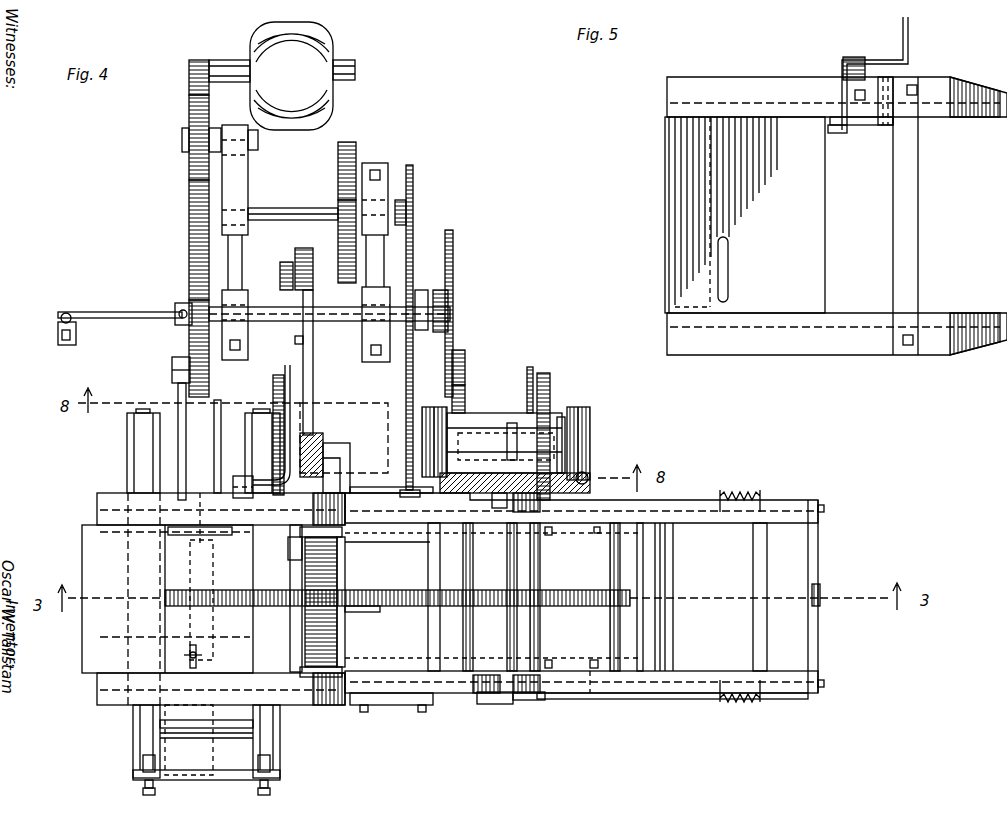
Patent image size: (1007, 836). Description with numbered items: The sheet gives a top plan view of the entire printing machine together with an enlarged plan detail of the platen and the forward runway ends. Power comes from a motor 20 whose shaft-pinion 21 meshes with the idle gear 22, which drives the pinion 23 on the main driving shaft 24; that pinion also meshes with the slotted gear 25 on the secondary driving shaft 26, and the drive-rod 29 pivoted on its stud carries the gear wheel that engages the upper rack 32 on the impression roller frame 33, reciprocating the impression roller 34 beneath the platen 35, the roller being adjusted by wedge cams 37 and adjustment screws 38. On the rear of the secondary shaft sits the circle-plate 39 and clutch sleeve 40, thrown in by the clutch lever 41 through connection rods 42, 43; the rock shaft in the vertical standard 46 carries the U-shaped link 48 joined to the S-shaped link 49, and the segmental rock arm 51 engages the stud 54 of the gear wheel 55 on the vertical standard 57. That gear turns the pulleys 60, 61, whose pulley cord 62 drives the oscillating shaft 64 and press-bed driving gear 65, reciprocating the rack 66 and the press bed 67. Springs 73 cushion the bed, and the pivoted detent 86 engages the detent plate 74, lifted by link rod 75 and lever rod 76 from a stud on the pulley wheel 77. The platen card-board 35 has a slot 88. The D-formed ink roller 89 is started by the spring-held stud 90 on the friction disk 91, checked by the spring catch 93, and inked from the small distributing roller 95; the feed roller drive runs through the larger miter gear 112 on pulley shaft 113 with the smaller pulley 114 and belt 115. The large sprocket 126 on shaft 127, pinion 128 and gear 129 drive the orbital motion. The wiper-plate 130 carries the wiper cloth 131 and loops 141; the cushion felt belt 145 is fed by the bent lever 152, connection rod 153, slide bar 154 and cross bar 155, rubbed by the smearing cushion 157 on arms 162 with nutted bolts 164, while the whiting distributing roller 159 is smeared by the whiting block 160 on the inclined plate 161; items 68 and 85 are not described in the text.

In FIG. 4, the motor 20 is at (282, 76).
In FIG. 4, the shaft-pinion 21 is at (188, 72).
In FIG. 4, the idle gear 22 is at (190, 107).
In FIG. 4, the pinion 23 is at (192, 212).
In FIG. 4, the main driving shaft 24 is at (265, 210).
In FIG. 4, the gear 25 is at (195, 330).
In FIG. 4, the secondary driving shaft 26 is at (328, 318).
In FIG. 4, the drive-rod 29 is at (186, 421).
In FIG. 4, the upper rack 32 is at (202, 772).
In FIG. 4, the impression roller frame 33 is at (206, 756).
In FIG. 4, the impression roller 34 is at (187, 733).
In FIG. 4, the support or platen 35 is at (167, 599).
In FIG. 5, the support or platen 35 is at (745, 215).
In FIG. 4, the wedge cams 37 is at (140, 721).
In FIG. 4, the adjustment screws 38 is at (143, 788).
In FIG. 4, the circle-plate 39 is at (453, 253).
In FIG. 4, the clutch sleeve 40 is at (420, 290).
In FIG. 4, the hand-operated clutch lever 41 is at (60, 318).
In FIG. 4, the connection rod 42 is at (115, 312).
In FIG. 4, the connection rod 43 is at (185, 308).
In FIG. 4, the vertical standard 46 is at (458, 412).
In FIG. 4, the U-shaped link 48 is at (505, 452).
In FIG. 4, the S-shaped link 49 is at (468, 382).
In FIG. 4, the segmental rock arm 51 is at (530, 367).
In FIG. 4, the stud 54 is at (528, 423).
In FIG. 4, the gear wheel 55 is at (552, 376).
In FIG. 4, the vertical standard 57 is at (564, 418).
In FIG. 4, the pulley 60 is at (434, 429).
In FIG. 4, the pulley 61 is at (593, 409).
In FIG. 4, the pulley cord 62 is at (591, 453).
In FIG. 4, the oscillating shaft 64 is at (505, 620).
In FIG. 4, the press-bed driving gear 65 is at (492, 595).
In FIG. 4, the rack 66 is at (360, 607).
In FIG. 4, the press bed or plank 67 is at (214, 600).
In FIG. 4, the bolt 68 is at (590, 676).
In FIG. 5, the springs 73 is at (766, 108).
In FIG. 4, the detent plate 74 is at (200, 500).
In FIG. 4, the link rod 75 is at (208, 547).
In FIG. 5, the link rod 75 is at (845, 134).
In FIG. 4, the lever rod 76 is at (282, 372).
In FIG. 5, the lever rod 76 is at (902, 30).
In FIG. 4, the pulley wheel 77 is at (303, 368).
In FIG. 4, the bolt 85 is at (200, 655).
In FIG. 4, the pivoted detent 86 is at (237, 478).
In FIG. 5, the pivoted detent 86 is at (862, 128).
In FIG. 5, the slot 88 is at (729, 289).
In FIG. 4, the D-formed ink roller 89 is at (340, 624).
In FIG. 4, the spring-held stud 90 is at (322, 548).
In FIG. 4, the friction disk 91 is at (322, 540).
In FIG. 4, the spring catch 93 is at (302, 547).
In FIG. 4, the small distributing roller 95 is at (305, 640).
In FIG. 4, the larger miter gear 112 is at (318, 433).
In FIG. 4, the pulley shaft 113 is at (350, 445).
In FIG. 4, the smaller pulley 114 is at (325, 405).
In FIG. 4, the belt 115 is at (299, 338).
In FIG. 4, the large sprocket 126 is at (413, 172).
In FIG. 4, the shaft 127 is at (400, 205).
In FIG. 4, the pinion 128 is at (338, 198).
In FIG. 4, the gear 129 is at (352, 143).
In FIG. 4, the wiper-plate 130 is at (396, 703).
In FIG. 4, the wiper cloth 131 is at (368, 602).
In FIG. 4, the loop 141 is at (412, 492).
In FIG. 4, the cushion felt belt 145 is at (485, 597).
In FIG. 4, the bent lever 152 is at (500, 704).
In FIG. 4, the connection rod 153 is at (652, 700).
In FIG. 4, the spring-pressed slide bar 154 is at (757, 623).
In FIG. 4, the cross bar 155 is at (450, 597).
In FIG. 4, the adjustable smearing cushion 157 is at (541, 557).
In FIG. 4, the whiting distributing roller 159 is at (614, 620).
In FIG. 4, the block of caked whiting 160 is at (653, 569).
In FIG. 4, the inclined supporting plate 161 is at (673, 581).
In FIG. 4, the horizontal arms 162 is at (557, 668).
In FIG. 4, the nutted bolt 164 is at (595, 597).